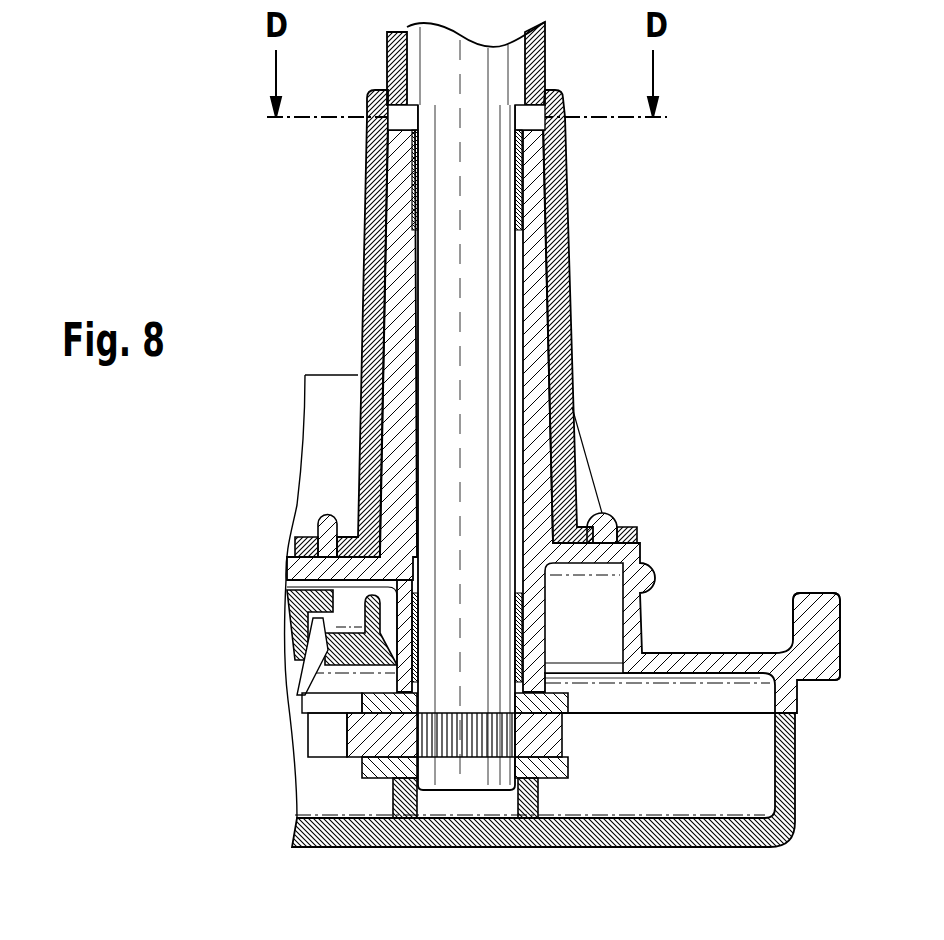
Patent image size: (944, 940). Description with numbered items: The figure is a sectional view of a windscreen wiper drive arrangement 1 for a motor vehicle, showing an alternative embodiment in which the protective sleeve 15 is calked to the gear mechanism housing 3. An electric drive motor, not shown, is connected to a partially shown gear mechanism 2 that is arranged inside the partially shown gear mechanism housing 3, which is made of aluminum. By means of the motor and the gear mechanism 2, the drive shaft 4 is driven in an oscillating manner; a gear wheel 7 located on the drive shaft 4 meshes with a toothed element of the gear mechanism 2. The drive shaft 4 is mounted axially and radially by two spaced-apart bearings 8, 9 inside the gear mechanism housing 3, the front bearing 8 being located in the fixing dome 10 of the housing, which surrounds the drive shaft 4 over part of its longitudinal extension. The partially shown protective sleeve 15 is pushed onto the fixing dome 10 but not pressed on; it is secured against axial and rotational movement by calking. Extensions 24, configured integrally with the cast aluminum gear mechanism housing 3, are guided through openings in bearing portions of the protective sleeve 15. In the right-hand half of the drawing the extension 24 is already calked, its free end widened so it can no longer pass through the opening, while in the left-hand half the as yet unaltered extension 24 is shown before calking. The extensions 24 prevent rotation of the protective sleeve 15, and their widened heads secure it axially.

The windscreen wiper drive arrangement 1 is at (733, 232).
The gear mechanism 2 is at (325, 740).
The gear mechanism housing 3 is at (820, 597).
The drive shaft 4 is at (495, 80).
The gear wheel 7 is at (380, 740).
The front bearing 8 is at (519, 180).
The bearing 9 is at (517, 615).
The fixing dome 10 is at (537, 332).
The protective sleeve 15 is at (565, 240).
The extension 24 is at (328, 520).